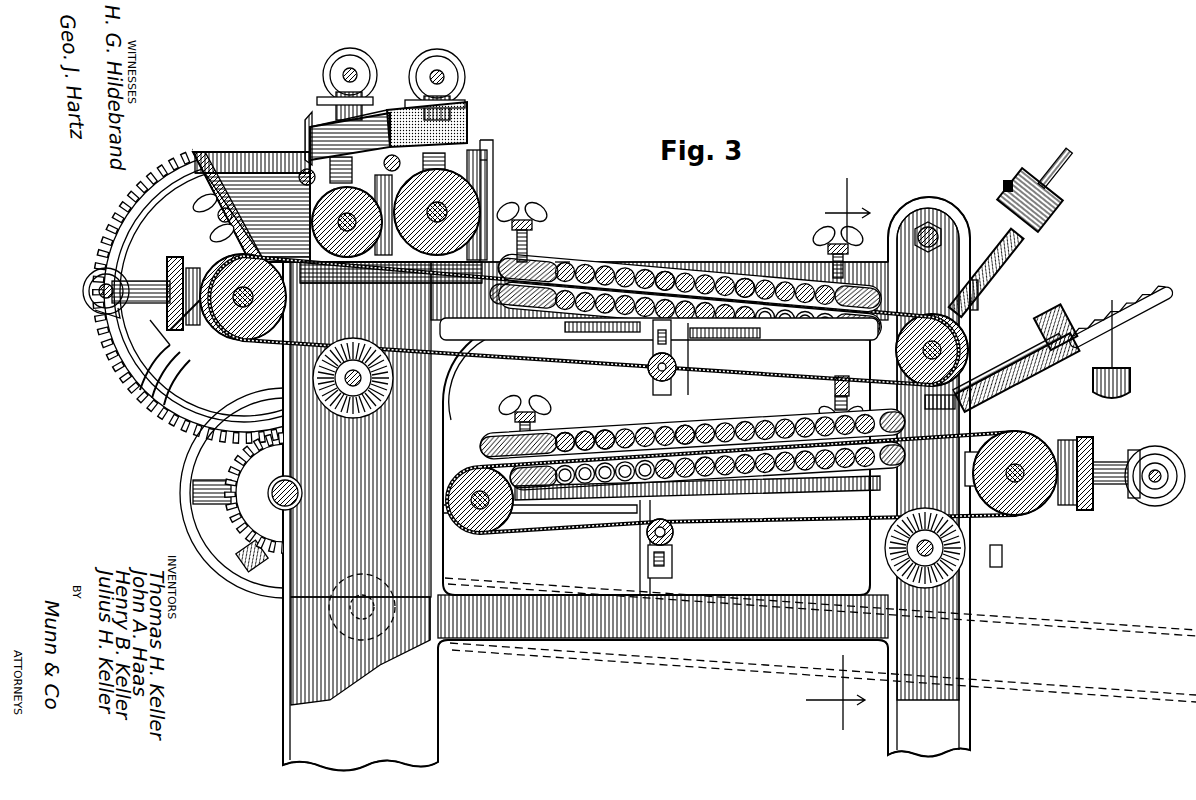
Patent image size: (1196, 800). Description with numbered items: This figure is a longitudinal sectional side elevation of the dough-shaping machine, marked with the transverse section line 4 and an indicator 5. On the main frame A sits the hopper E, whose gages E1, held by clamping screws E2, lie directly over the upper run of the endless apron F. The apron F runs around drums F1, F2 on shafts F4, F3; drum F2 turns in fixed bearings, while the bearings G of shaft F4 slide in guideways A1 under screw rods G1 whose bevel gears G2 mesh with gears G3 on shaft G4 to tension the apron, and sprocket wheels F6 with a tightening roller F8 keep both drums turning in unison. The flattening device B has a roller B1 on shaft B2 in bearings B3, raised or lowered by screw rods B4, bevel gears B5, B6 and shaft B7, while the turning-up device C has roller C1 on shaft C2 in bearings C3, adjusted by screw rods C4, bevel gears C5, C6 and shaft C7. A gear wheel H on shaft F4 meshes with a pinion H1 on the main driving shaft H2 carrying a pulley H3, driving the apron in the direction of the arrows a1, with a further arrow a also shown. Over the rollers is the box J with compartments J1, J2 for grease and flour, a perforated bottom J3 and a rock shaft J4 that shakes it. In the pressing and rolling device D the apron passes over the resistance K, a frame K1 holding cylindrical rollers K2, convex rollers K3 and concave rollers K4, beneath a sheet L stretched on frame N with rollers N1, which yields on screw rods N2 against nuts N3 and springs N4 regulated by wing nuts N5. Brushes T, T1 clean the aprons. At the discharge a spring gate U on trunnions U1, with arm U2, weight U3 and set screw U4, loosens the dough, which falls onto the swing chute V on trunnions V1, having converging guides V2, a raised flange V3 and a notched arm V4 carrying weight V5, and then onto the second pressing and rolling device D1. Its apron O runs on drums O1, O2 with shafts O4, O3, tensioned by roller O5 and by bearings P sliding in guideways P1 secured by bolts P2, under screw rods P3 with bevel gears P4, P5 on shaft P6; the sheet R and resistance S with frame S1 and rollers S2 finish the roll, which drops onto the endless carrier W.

The main frame A is at (296, 676).
The guideways A1 is at (160, 325).
The flattening device B is at (312, 228).
The roller B1 is at (368, 200).
The shaft B2 is at (395, 205).
The bearings B3 is at (330, 170).
The screw rods B4 is at (299, 180).
The bevel gear wheels B5 is at (318, 98).
The bevel gear wheels B6 is at (328, 68).
The transverse shaft B7 is at (357, 74).
The turning up device C is at (450, 252).
The roller C1 is at (447, 210).
The shaft C2 is at (487, 195).
The bearings C3 is at (445, 160).
The screw rods C4 is at (478, 150).
The bevel gear wheels C5 is at (465, 103).
The bevel gear wheels C6 is at (463, 68).
The transverse shaft C7 is at (440, 74).
The pressing and rolling device D is at (718, 268).
The second pressing and rolling device D1 is at (740, 428).
The hopper E is at (225, 152).
The gages E1 is at (268, 170).
The clamping screws E2 is at (206, 205).
The endless apron F is at (380, 288).
The drum F1 is at (240, 340).
The drum F2 is at (940, 395).
The shaft F3 is at (968, 338).
The shaft F4 is at (330, 295).
The sprocket wheels F6 is at (652, 368).
The tightening roller F8 is at (676, 372).
The bearings G is at (205, 335).
The screw rods G1 is at (213, 232).
The bevel gear wheels G2 is at (130, 280).
The bevel gear wheels G3 is at (100, 290).
The transverse shaft G4 is at (100, 315).
The gear wheel H is at (172, 410).
The pinion H1 is at (275, 472).
The main driving shaft H2 is at (278, 498).
The pulley H3 is at (205, 540).
The box J is at (375, 118).
The compartment J1 is at (320, 116).
The compartment J2 is at (467, 122).
The bottom J3 is at (370, 128).
The rock shaft J4 is at (392, 171).
The resistance K is at (462, 318).
The resistance frame K1 is at (868, 330).
The rollers K2 is at (601, 324).
The rollers K3 is at (686, 326).
The rollers K4 is at (815, 325).
The sheet L is at (745, 275).
The resistance frame N is at (565, 262).
The rollers N1 is at (660, 272).
The screw rods N2 is at (565, 262).
The nuts N3 is at (835, 380).
The springs N4 is at (517, 250).
The wing nuts N5 is at (530, 207).
The endless apron O is at (778, 510).
The drum O1 is at (965, 470).
The drum O2 is at (515, 512).
The shaft O3 is at (475, 530).
The shaft O4 is at (1015, 482).
The tightening roller O5 is at (674, 532).
The bearings P is at (1058, 425).
The guideways P1 is at (1082, 510).
The bolts P2 is at (1002, 560).
The screw rods P3 is at (1078, 440).
The bevel gear wheels P4 is at (1128, 452).
The bevel gear wheels P5 is at (1165, 452).
The shaft P6 is at (1152, 482).
The sheet R is at (682, 428).
The resistance S is at (605, 438).
The frame S1 is at (565, 440).
The rollers S2 is at (592, 432).
The rotary brush T is at (375, 392).
The rotary brush T1 is at (888, 555).
The spring gate U is at (985, 270).
The trunnions U1 is at (962, 285).
The arm U2 is at (1065, 172).
The weight U3 is at (1048, 210).
The set screw U4 is at (1005, 180).
The swing chute V is at (985, 375).
The trunnions V1 is at (1060, 375).
The converging guides V2 is at (1030, 345).
The raised flange V3 is at (1058, 312).
The notched arm V4 is at (1150, 312).
The weight V5 is at (1140, 368).
The endless carrier W is at (782, 668).
The arrow a is at (925, 410).
The arrows a1 is at (604, 255).
The section line 4— 4 is at (838, 452).
The section line 5 is at (885, 210).